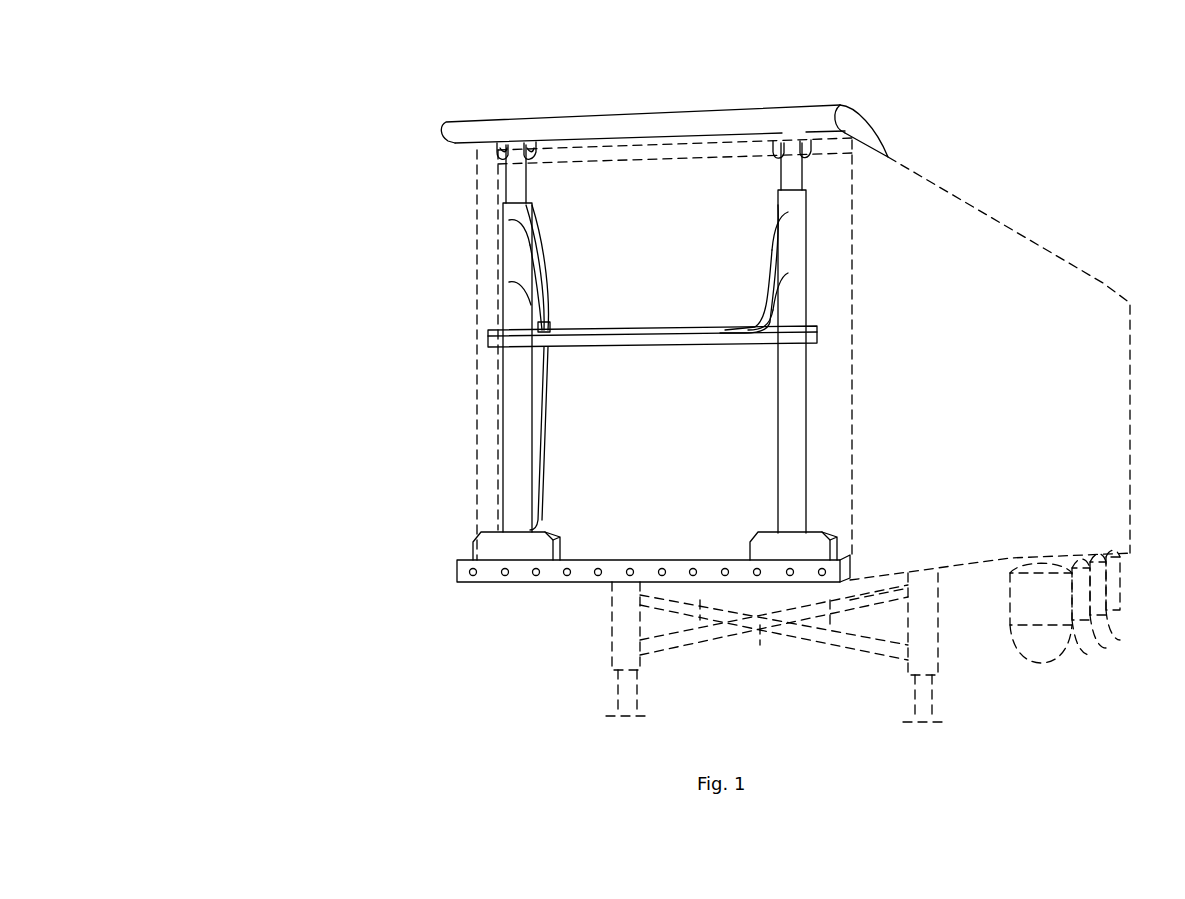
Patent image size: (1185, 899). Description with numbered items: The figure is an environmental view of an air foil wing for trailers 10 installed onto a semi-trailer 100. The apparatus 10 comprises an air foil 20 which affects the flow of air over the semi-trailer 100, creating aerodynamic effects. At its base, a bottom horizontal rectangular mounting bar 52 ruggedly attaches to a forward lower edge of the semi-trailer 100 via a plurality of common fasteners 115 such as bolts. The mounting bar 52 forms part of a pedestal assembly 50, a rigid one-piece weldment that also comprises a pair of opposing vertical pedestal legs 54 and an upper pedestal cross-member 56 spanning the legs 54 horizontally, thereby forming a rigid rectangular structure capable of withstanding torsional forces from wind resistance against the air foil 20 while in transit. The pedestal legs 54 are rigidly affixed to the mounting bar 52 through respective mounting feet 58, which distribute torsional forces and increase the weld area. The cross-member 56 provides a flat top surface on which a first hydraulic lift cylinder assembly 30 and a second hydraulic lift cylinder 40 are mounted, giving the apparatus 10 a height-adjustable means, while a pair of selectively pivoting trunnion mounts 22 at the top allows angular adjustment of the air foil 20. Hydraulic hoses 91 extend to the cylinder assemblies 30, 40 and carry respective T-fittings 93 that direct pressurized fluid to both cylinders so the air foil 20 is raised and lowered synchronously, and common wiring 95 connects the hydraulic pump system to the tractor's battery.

The air foil wing for trailers 10 is at (290, 117).
The air foil 20 is at (853, 127).
The trunnion mounts 22 is at (787, 140).
The first hydraulic lift cylinder assembly 30 is at (805, 176).
The second hydraulic lift cylinder 40 is at (504, 186).
The pedestal assembly 50 is at (820, 478).
The mounting bar 52 is at (740, 575).
The pedestal legs 54 is at (515, 405).
The pedestal cross-member 56 is at (818, 336).
The mounting feet 58 is at (560, 545).
The hydraulic hoses 91 is at (537, 268).
The T-fittings 93 is at (545, 327).
The wiring 95 is at (537, 290).
The semi-trailer 100 is at (1053, 290).
The fasteners 115 is at (598, 575).